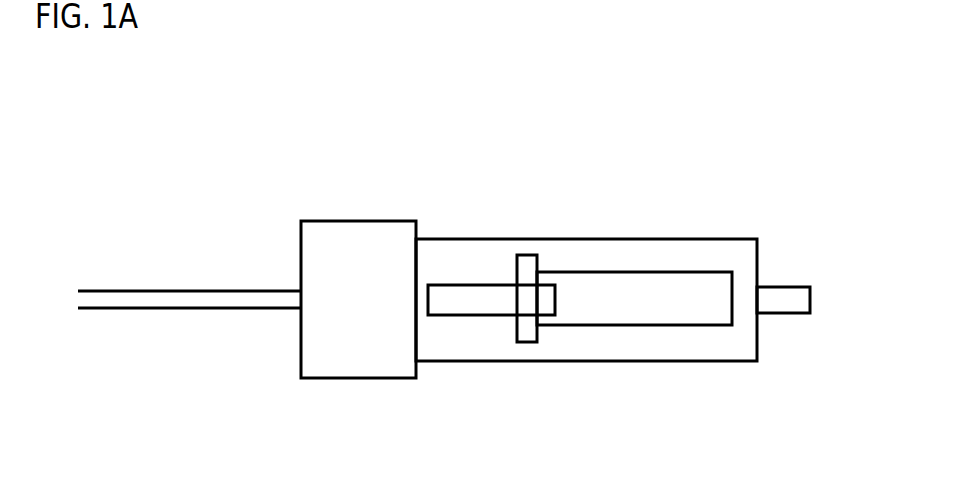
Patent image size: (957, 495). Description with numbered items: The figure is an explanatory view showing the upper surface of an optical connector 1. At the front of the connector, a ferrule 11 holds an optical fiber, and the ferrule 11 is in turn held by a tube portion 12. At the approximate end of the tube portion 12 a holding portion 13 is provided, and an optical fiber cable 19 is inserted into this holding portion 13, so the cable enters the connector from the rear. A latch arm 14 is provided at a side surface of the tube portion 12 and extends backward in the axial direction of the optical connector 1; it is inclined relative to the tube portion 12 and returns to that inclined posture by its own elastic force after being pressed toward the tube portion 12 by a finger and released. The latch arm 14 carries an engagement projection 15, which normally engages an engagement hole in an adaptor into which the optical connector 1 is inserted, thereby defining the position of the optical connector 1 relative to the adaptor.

The optical connector 1 is at (728, 192).
The ferrule 11 is at (780, 303).
The tube portion 12 is at (592, 258).
The holding portion 13 is at (356, 278).
The latch arm 14 is at (642, 292).
The engagement projection 15 is at (516, 262).
The optical fiber cable 19 is at (120, 302).